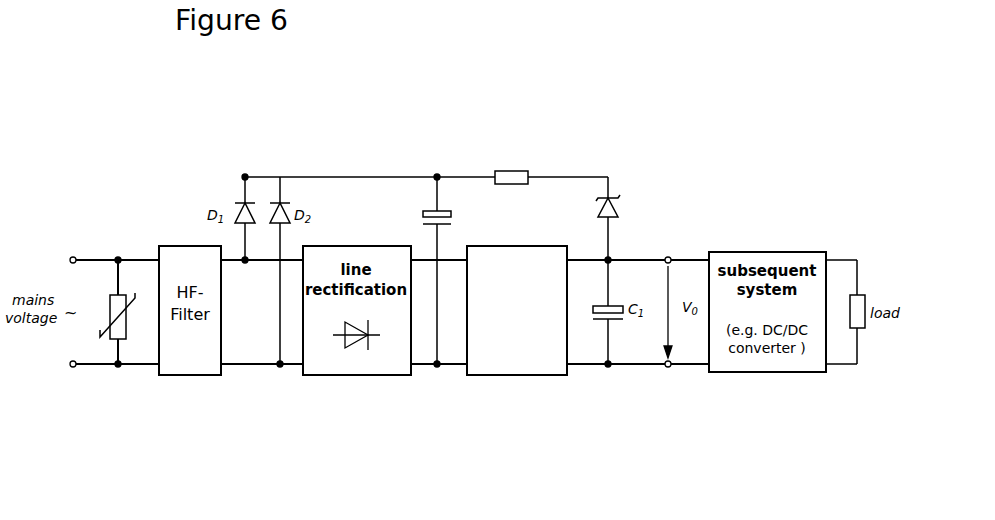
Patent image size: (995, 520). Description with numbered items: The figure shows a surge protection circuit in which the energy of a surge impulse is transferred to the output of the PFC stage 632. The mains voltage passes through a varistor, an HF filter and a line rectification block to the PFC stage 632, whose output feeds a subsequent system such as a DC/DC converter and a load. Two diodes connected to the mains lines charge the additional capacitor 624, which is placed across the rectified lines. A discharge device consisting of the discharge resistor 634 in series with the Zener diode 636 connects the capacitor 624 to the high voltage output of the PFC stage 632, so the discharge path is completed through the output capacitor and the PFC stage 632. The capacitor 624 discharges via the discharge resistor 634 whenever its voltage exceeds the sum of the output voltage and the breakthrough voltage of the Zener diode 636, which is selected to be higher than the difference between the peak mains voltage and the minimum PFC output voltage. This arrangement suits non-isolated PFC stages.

The capacitor 624 is at (420, 213).
The PFC stage 632 is at (518, 378).
The discharge resistor 634 is at (531, 175).
The Zener diode 636 is at (619, 197).